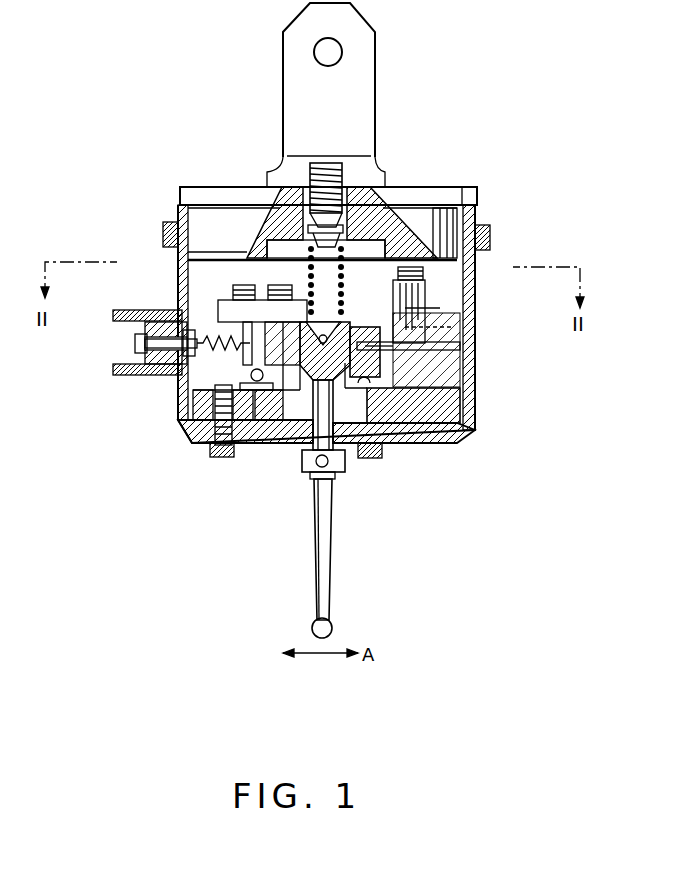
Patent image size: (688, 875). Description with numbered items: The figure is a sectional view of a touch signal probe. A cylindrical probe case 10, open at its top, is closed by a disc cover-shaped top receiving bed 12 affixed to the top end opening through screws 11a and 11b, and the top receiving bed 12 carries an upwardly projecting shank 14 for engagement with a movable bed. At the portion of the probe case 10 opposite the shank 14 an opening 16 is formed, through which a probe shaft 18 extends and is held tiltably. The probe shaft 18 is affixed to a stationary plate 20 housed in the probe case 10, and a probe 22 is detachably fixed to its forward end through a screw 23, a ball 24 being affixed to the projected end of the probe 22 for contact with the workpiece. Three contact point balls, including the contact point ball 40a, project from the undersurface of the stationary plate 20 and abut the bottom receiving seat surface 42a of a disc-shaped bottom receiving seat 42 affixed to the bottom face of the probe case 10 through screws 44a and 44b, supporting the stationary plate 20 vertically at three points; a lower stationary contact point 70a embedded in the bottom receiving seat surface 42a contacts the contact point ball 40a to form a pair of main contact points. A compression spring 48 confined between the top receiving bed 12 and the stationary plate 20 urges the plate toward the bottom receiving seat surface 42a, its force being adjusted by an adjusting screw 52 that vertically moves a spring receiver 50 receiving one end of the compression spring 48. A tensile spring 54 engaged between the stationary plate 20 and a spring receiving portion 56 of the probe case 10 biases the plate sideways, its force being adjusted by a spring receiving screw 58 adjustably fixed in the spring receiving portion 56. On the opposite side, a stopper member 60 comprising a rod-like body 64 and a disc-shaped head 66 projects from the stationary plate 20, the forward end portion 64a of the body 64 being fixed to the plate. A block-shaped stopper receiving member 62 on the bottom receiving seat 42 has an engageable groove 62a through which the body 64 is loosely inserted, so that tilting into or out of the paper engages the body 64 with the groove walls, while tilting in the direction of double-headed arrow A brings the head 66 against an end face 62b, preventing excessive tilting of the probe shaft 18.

The probe case 10 is at (472, 285).
The screw 11a is at (163, 232).
The screw 11b is at (490, 236).
The top receiving bed 12 is at (433, 196).
The shank 14 is at (373, 103).
The opening 16 is at (290, 446).
The probe shaft 18 is at (316, 403).
The stationary plate 20 is at (342, 320).
The probe 22 is at (314, 527).
The screw 23 is at (338, 472).
The ball 24 is at (313, 622).
The contact point ball 40a is at (250, 378).
The bottom receiving seat 42 is at (430, 425).
The bottom receiving seat surface 42a is at (460, 386).
The screw 44a is at (213, 456).
The screw 44b is at (370, 459).
The compression spring 48 is at (308, 279).
The spring receiver 50 is at (344, 229).
The adjusting screw 52 is at (325, 166).
The tensile spring 54 is at (215, 337).
The spring receiving portion 56 is at (131, 310).
The spring receiving screw 58 is at (135, 341).
The stopper member 60 is at (425, 318).
The stopper receiving member 62 is at (438, 250).
The engageable groove 62a is at (440, 308).
The end face 62b is at (452, 327).
The body 64 is at (445, 370).
The forward end portion 64a is at (363, 328).
The head 66 is at (460, 346).
The lower stationary contact point 70a is at (263, 428).